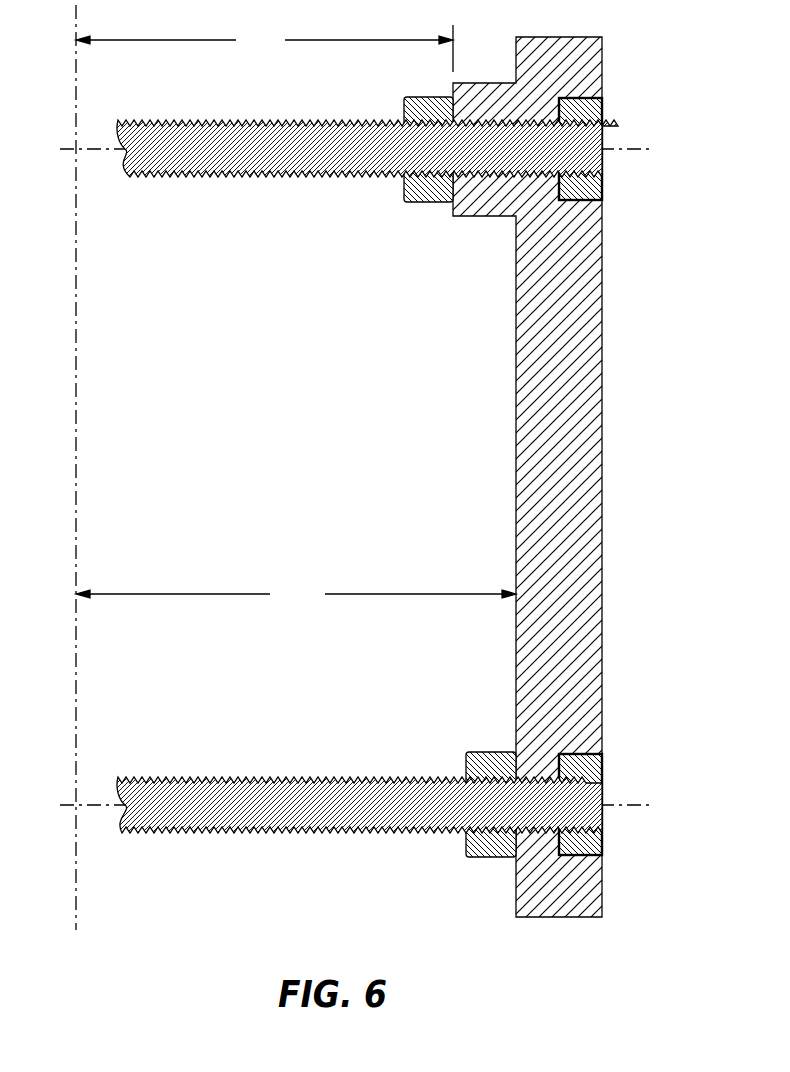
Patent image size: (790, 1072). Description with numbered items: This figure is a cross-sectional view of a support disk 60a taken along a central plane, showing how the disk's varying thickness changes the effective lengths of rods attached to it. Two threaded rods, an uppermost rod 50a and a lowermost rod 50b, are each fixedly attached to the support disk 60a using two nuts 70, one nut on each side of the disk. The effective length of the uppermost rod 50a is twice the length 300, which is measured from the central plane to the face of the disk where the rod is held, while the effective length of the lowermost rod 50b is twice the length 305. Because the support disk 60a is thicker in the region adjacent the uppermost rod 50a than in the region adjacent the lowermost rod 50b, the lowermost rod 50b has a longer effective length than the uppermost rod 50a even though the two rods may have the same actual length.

The uppermost rod 50a is at (270, 163).
The lowermost rod 50b is at (290, 788).
The support disk 60a is at (580, 443).
The nut 70 is at (430, 197).
The length 300 is at (264, 47).
The length 305 is at (296, 594).